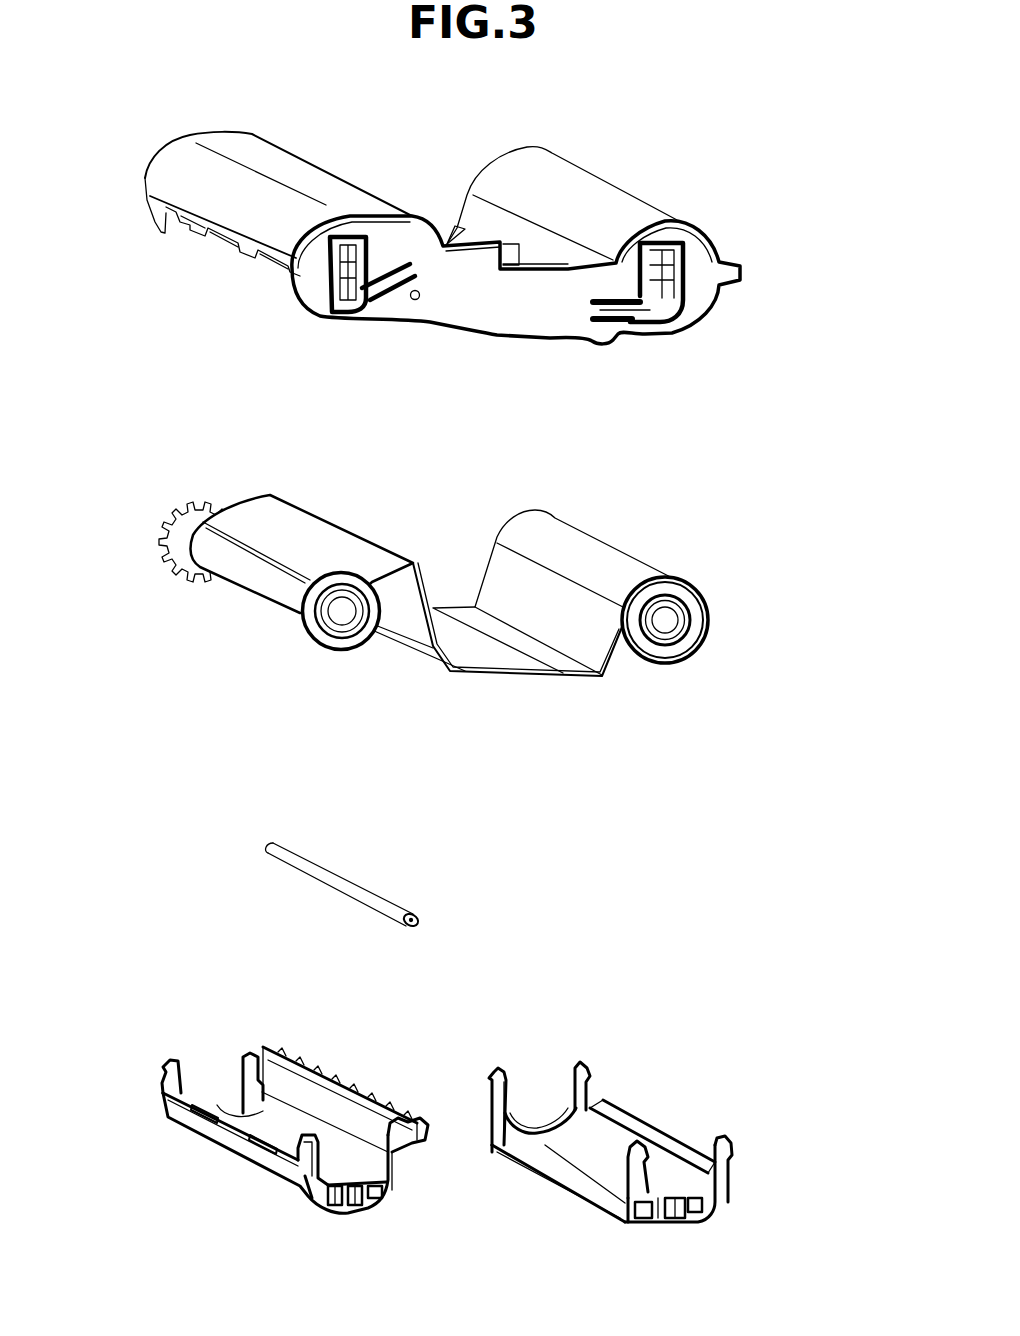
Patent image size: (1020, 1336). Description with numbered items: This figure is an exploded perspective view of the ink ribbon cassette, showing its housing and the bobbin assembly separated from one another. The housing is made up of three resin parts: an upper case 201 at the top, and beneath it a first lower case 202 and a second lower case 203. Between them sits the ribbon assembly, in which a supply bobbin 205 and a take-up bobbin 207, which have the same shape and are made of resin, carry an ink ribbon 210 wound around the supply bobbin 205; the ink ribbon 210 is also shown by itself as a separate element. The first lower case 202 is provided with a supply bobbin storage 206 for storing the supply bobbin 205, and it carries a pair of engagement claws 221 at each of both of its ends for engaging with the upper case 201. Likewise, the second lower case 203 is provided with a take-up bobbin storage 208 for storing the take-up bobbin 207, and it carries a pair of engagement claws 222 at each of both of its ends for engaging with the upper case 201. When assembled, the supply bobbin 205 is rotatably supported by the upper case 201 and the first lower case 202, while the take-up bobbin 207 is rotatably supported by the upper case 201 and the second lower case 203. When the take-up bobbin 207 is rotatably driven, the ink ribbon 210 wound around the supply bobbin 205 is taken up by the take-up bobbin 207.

The upper case 201 is at (586, 200).
The first lower case 202 is at (553, 1190).
The second lower case 203 is at (218, 1155).
The supply bobbin 205 is at (688, 598).
The supply bobbin storage 206 is at (622, 1133).
The take-up bobbin 207 is at (270, 583).
The take-up bobbin storage 208 is at (287, 1115).
The ink ribbon 210 is at (587, 543).
The engagement claws 221 is at (495, 1068).
The engagement claws 222 is at (170, 1062).